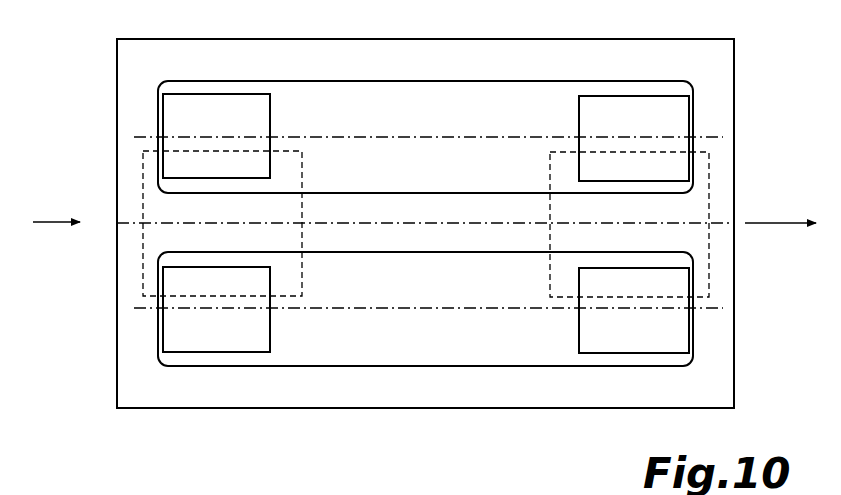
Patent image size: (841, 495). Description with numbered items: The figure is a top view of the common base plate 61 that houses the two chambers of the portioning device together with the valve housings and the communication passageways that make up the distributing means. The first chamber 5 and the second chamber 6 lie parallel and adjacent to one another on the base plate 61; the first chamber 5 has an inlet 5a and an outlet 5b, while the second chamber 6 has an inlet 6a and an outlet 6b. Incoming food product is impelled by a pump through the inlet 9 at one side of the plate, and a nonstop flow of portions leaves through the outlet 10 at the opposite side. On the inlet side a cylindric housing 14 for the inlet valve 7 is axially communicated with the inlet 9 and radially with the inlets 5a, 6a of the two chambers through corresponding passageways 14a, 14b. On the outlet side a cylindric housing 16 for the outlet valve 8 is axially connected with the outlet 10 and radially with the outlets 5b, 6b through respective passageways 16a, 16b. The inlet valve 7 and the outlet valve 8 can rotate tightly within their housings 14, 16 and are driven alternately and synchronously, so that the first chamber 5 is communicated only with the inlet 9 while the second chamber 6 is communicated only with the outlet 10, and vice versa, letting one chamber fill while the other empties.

The first chamber 5 is at (385, 88).
The inlet of the first chamber 5a is at (218, 103).
The outlet of the first chamber 5b is at (620, 103).
The second chamber 6 is at (422, 355).
The inlet of the second chamber 6a is at (222, 340).
The outlet of the second chamber 6b is at (615, 340).
The base plate 61 is at (538, 55).
The inlet valve 7 is at (140, 245).
The outlet valve 8 is at (712, 195).
The inlet 9 is at (51, 221).
The outlet 10 is at (778, 222).
The cylindric housing for the inlet valve 14 is at (157, 195).
The passageway 14a is at (203, 166).
The passageway 14b is at (203, 285).
The cylindric housing for the outlet valve 16 is at (693, 240).
The passageway 16a is at (630, 163).
The passageway 16b is at (630, 280).